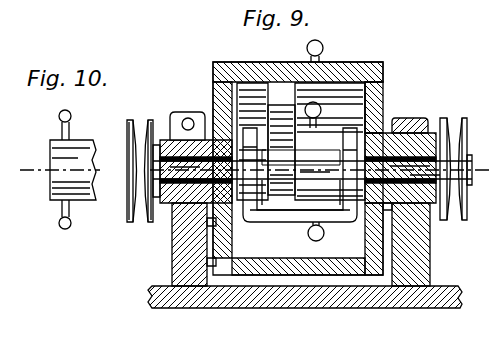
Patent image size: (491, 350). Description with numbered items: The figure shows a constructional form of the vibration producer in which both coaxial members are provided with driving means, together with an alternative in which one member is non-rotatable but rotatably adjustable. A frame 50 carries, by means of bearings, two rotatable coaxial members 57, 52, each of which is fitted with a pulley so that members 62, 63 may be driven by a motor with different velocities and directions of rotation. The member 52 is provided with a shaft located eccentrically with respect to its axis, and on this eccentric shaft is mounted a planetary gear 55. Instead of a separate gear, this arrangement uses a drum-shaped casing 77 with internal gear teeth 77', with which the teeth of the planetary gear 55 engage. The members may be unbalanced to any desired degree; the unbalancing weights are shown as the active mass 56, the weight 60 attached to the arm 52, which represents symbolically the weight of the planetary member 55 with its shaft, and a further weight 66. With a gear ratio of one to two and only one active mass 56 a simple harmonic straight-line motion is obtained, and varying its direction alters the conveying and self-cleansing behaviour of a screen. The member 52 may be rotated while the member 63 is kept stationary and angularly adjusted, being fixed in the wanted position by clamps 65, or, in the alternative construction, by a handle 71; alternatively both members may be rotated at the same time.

In FIG. 9, the frame 50 is at (430, 262).
In FIG. 9, the rotatable member 52 is at (415, 170).
In FIG. 9, the planetary gear 55 is at (294, 167).
In FIG. 9, the active mass 56 is at (380, 97).
In FIG. 9, the rotatable member 57 is at (160, 205).
In FIG. 9, the unbalancing weight 60 is at (325, 234).
In FIG. 9, the driven member 62 is at (446, 127).
In FIG. 9, the driven member 63 is at (137, 128).
In FIG. 9, the clamps 65 is at (187, 118).
In FIG. 9, the unbalancing weight 66 is at (324, 51).
In FIG. 10, the handle 71 is at (62, 230).
In FIG. 9, the drum-shaped casing 77 is at (300, 185).
In FIG. 9, the internal gear teeth 77' is at (300, 243).